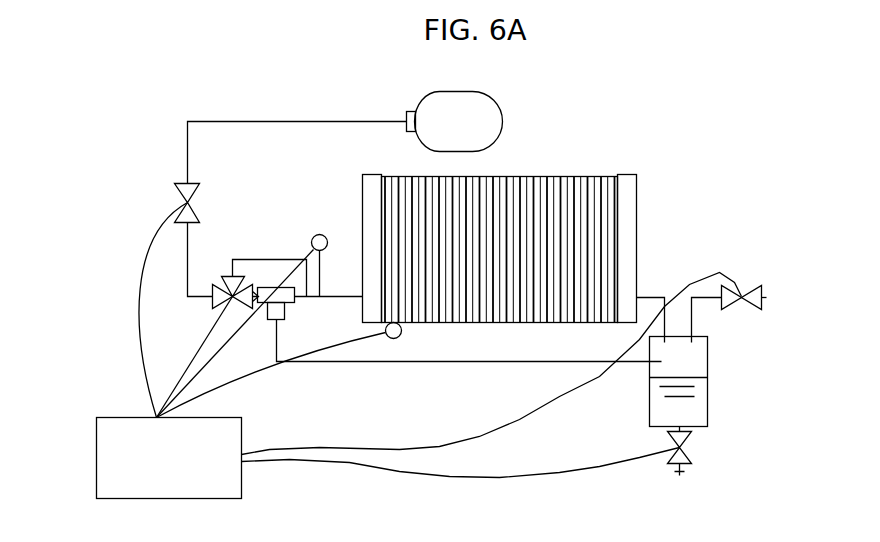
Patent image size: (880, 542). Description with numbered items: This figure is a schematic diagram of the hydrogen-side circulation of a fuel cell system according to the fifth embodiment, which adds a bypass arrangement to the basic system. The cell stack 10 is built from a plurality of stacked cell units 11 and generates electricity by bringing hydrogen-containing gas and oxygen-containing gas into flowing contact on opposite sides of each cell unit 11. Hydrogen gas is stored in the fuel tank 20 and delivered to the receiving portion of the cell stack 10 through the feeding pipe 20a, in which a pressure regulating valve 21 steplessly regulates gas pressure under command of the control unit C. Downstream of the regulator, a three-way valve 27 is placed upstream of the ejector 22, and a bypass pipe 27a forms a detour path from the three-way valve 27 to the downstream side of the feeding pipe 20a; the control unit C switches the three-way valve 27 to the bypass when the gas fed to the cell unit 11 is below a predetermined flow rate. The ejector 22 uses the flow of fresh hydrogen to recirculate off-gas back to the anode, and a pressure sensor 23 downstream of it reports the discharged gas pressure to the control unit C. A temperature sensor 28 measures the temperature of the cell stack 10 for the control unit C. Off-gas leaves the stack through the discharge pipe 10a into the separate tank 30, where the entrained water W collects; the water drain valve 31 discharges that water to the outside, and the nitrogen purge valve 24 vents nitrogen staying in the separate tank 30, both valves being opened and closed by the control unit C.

The feeding pipe 20a is at (245, 120).
The fuel tank 20 is at (438, 92).
The pressure regulating valve 21 is at (175, 198).
The cell stack 10 is at (363, 175).
The cell unit 11 is at (393, 177).
The three-way valve 27 is at (216, 288).
The bypass pipe 27a is at (271, 260).
The ejector 22 is at (298, 305).
The pressure sensor 23 is at (318, 235).
The temperature sensor 28 is at (402, 332).
The discharge pipe 10a is at (653, 295).
The nitrogen purge valve 24 is at (752, 290).
The separate tank 30 is at (710, 428).
The water W is at (708, 395).
The water drain valve 31 is at (694, 458).
The control unit C is at (114, 414).